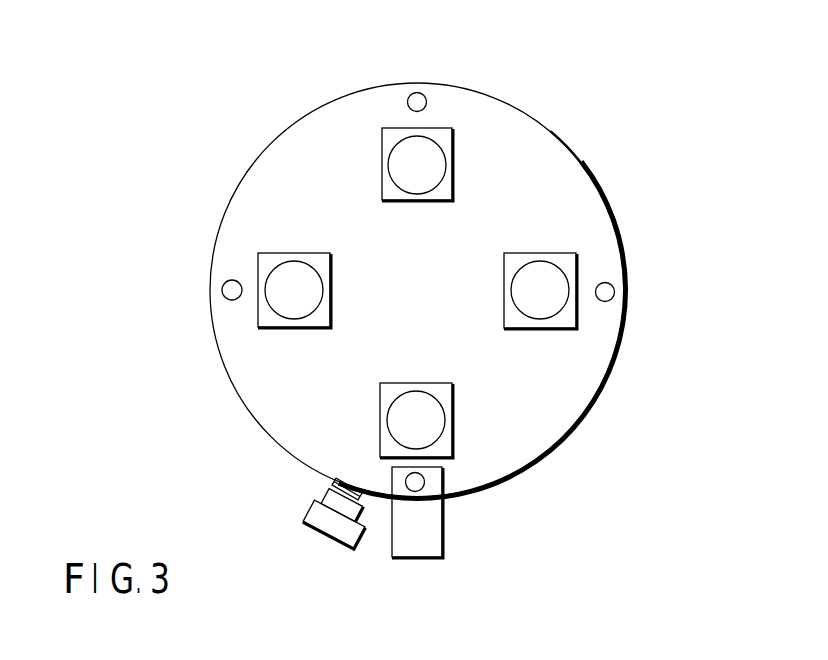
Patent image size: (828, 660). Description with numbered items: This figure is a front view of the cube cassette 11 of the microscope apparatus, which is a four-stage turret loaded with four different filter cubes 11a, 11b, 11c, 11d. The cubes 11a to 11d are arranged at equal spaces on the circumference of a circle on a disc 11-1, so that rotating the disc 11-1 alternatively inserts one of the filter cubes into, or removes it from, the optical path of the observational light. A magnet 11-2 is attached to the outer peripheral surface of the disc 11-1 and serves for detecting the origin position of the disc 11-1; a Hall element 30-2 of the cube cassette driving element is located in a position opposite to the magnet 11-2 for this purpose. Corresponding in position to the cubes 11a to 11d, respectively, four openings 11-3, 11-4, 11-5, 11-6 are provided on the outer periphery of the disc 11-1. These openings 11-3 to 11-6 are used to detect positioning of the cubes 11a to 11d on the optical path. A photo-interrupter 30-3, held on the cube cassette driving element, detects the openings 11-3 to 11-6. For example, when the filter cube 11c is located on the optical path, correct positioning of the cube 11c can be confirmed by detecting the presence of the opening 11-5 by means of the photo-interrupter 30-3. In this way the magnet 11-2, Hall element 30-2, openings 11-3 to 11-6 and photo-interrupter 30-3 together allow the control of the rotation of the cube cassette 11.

The cube cassette 11 is at (330, 86).
The disc 11-1 is at (598, 393).
The magnet 11-2 is at (333, 487).
The opening 11-3 is at (418, 93).
The opening 11-4 is at (608, 285).
The opening 11-5 is at (424, 486).
The opening 11-6 is at (224, 283).
The filter cube 11a is at (452, 157).
The filter cube 11b is at (544, 253).
The filter cube 11c is at (452, 420).
The filter cube 11d is at (258, 313).
The Hall element 30-2 is at (331, 538).
The photo-interrupter 30-3 is at (437, 558).